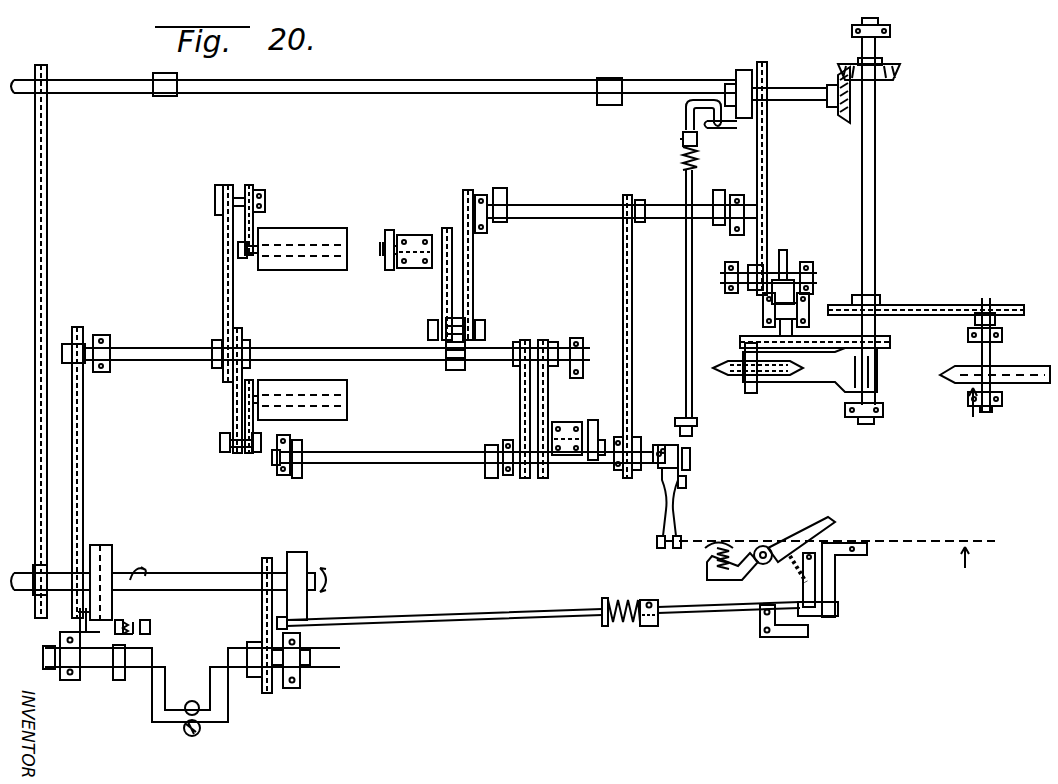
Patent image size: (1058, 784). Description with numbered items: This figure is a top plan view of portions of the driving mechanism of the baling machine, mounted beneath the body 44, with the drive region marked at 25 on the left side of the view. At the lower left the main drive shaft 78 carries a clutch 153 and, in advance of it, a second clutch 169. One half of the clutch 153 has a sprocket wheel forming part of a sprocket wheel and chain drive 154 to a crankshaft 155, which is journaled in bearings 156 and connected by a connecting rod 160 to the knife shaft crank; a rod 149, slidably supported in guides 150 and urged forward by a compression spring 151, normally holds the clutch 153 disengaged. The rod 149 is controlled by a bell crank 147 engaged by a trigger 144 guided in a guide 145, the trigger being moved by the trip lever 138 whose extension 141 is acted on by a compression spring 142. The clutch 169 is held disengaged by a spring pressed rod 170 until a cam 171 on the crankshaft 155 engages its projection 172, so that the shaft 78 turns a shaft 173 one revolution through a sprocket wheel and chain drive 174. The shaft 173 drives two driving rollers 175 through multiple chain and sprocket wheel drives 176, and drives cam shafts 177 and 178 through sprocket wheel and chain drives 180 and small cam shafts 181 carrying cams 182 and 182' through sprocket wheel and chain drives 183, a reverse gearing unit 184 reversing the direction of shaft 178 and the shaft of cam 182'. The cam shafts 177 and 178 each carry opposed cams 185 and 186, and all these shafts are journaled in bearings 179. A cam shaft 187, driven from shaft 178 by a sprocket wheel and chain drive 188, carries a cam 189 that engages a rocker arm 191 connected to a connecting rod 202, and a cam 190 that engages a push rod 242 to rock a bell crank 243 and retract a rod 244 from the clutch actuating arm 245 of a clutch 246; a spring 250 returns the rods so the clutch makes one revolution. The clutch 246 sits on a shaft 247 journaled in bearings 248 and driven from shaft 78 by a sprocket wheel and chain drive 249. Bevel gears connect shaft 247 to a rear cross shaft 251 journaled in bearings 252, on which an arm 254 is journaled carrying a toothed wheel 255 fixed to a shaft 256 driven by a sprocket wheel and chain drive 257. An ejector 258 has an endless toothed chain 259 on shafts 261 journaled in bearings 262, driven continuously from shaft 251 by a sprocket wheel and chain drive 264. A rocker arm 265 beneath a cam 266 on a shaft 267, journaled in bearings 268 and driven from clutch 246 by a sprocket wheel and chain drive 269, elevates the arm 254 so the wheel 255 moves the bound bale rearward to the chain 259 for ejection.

The shaft 25 is at (55, 535).
The body 44 is at (830, 567).
The main drive shaft 78 is at (180, 580).
The trip lever 138 is at (830, 520).
The extension 141 is at (707, 574).
The compression spring 142 is at (712, 546).
The trigger 144 is at (803, 594).
The guide 145 is at (836, 577).
The bell crank 147 is at (762, 637).
The rod 149 is at (510, 612).
The guides 150 is at (650, 626).
The compression spring 151 is at (626, 622).
The clutch 153 is at (316, 557).
The sprocket wheel and chain drive 154 is at (268, 695).
The crankshaft 155 is at (227, 648).
The bearings 156 is at (78, 680).
The connecting rod 160 is at (195, 736).
The second clutch 169 is at (126, 557).
The spring pressed rod 170 is at (134, 625).
The cam 171 is at (120, 680).
The projection 172 is at (150, 640).
The shaft 173 is at (342, 356).
The sprocket wheel and chain drive 174 is at (84, 462).
The driving rollers 175 is at (322, 228).
The chain and sprocket wheel drives 176 is at (223, 291).
The cam shaft 177 is at (425, 452).
The cam shaft 178 is at (560, 207).
The bearings 179 is at (262, 198).
The sprocket wheel and chain drives 180 is at (473, 283).
The cam shafts 181 is at (384, 258).
The cam 182 is at (596, 470).
The cam 182' is at (370, 232).
The sprocket wheel and chain drives 183 is at (442, 295).
The reverse gearing unit 184 is at (448, 367).
The cam 185 is at (718, 190).
The cam 186 is at (507, 200).
The cam shaft 187 is at (628, 470).
The sprocket wheel and chain drive 188 is at (623, 310).
The cam 189 is at (688, 483).
The cam 190 is at (692, 466).
The rocker arm 191 is at (664, 511).
The connecting rod 202 is at (658, 550).
The push rod 242 is at (688, 340).
The bell crank 243 is at (691, 100).
The rod 244 is at (724, 137).
The clutch actuating arm 245 is at (762, 125).
The clutch 246 is at (752, 64).
The shaft 247 is at (523, 88).
The bearings 248 is at (162, 95).
The sprocket wheel and chain drive 249 is at (47, 266).
The spring 250 is at (682, 158).
The rear cross shaft 251 is at (868, 275).
The bearings 252 is at (890, 36).
The arm 254 is at (822, 385).
The toothed wheel 255 is at (780, 372).
The shaft 256 is at (748, 393).
The sprocket wheel and chain drive 257 is at (886, 345).
The ejector 258 is at (1006, 412).
The endless toothed chain 259 is at (1012, 368).
The shafts 261 is at (986, 298).
The bearings 262 is at (970, 408).
The sprocket wheel and chain drive 264 is at (900, 308).
The rocker arm 265 is at (766, 310).
The cam 266 is at (785, 258).
The shaft 267 is at (812, 270).
The bearings 268 is at (729, 263).
The sprocket wheel and chain drive 269 is at (765, 228).